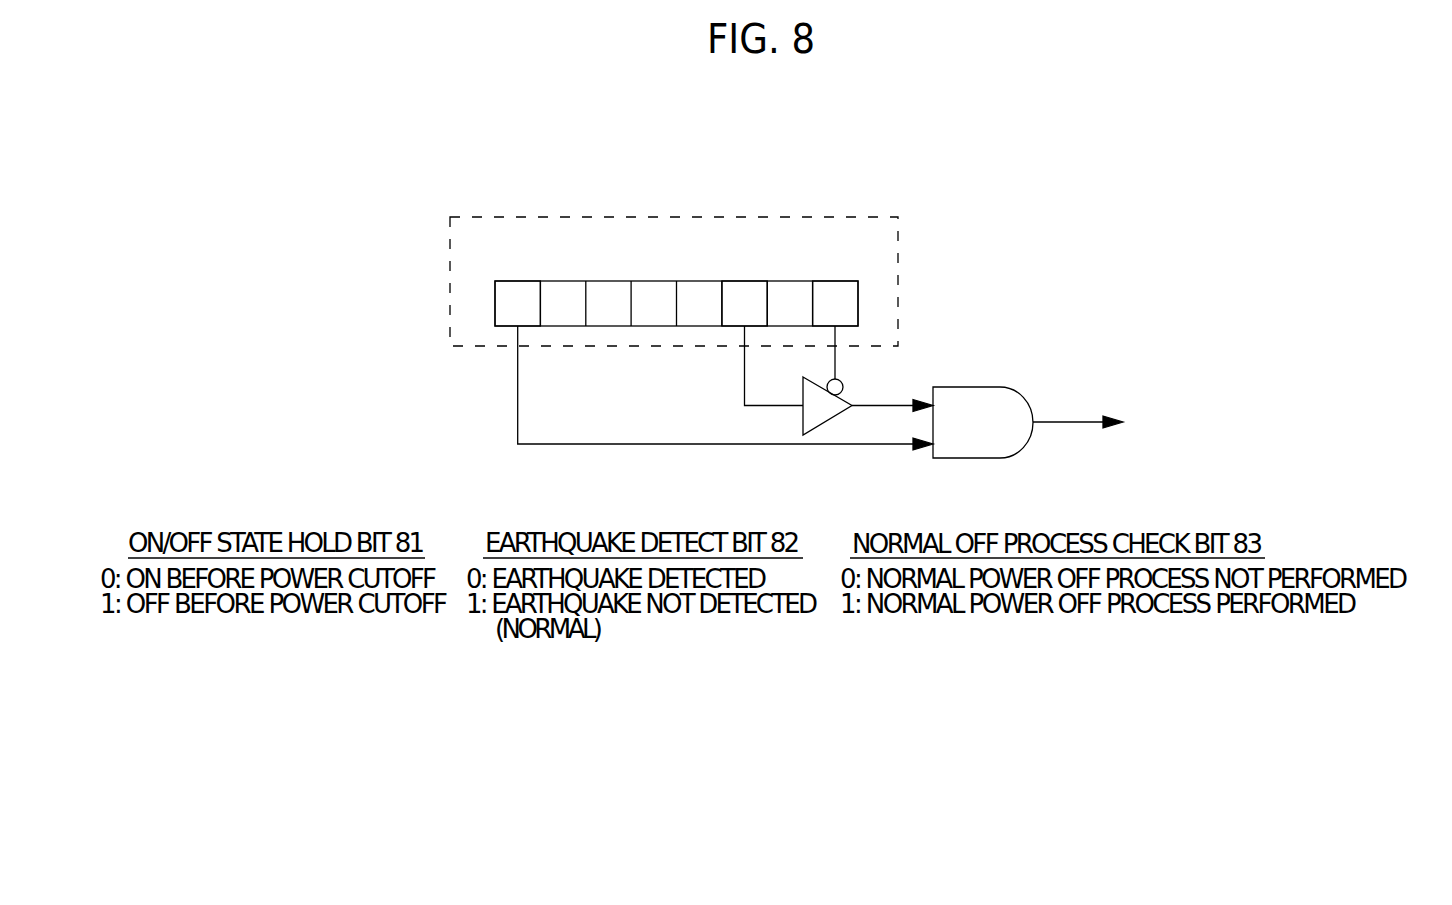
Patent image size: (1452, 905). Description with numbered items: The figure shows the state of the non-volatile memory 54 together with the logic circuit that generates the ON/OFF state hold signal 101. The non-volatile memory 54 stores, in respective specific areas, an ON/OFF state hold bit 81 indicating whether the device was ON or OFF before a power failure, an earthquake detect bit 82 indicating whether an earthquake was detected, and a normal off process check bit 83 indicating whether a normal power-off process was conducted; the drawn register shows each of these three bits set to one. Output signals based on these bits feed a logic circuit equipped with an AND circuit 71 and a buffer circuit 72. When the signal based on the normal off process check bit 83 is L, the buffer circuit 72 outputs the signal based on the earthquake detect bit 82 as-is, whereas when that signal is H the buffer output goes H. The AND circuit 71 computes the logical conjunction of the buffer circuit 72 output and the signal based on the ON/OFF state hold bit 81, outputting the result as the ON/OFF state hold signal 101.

The non-volatile memory 54 is at (634, 212).
The ON/OFF state hold bit 81 is at (520, 280).
The earthquake detect bit 82 is at (746, 280).
The normal off process check bit 83 is at (837, 280).
The AND circuit 71 is at (977, 386).
The buffer circuit 72 is at (851, 399).
The ON/OFF state hold signal 101 is at (1070, 421).